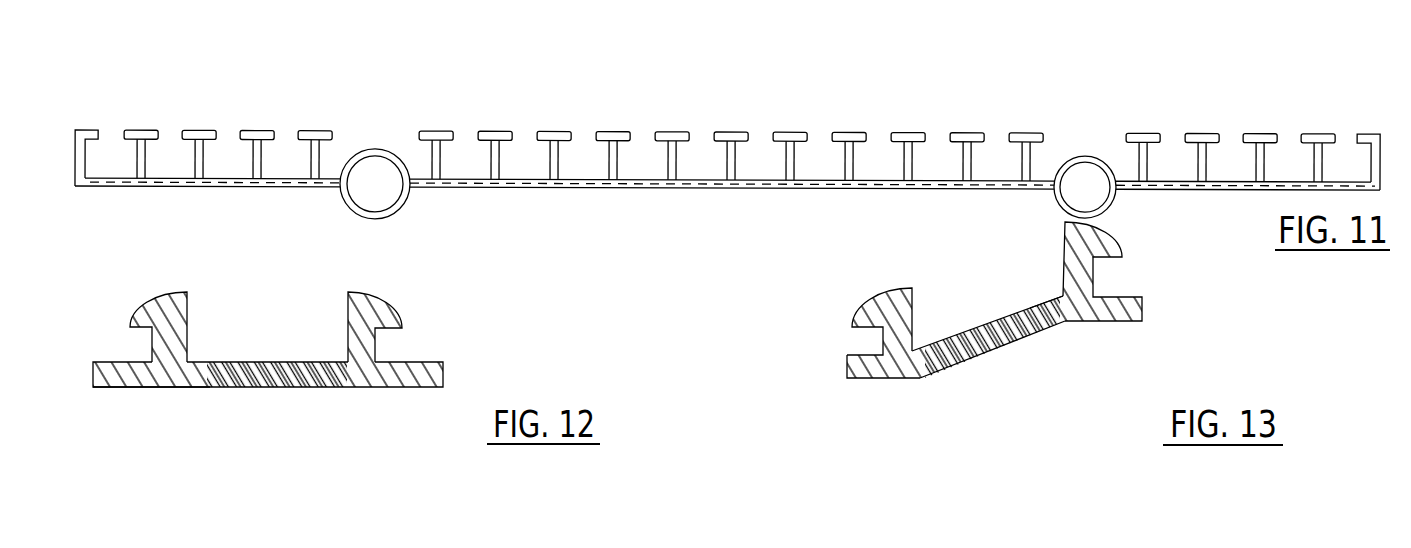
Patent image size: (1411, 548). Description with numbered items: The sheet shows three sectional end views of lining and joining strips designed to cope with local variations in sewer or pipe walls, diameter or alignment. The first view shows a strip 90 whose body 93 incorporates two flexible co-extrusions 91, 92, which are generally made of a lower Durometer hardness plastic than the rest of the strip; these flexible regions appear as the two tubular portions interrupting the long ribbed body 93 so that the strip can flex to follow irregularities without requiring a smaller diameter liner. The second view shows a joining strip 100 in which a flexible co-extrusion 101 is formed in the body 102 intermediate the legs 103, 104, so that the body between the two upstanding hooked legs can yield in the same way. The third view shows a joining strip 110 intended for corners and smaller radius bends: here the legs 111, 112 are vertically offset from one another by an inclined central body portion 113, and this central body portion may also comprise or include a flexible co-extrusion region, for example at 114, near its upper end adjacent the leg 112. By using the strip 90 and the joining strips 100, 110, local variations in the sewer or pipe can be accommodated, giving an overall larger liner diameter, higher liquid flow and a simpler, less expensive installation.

In FIG. 11, the strip 90 is at (728, 139).
In FIG. 11, the flexible co-extrusion 91 is at (362, 146).
In FIG. 11, the flexible co-extrusion 92 is at (1068, 148).
In FIG. 11, the body 93 is at (707, 187).
In FIG. 12, the joining strip 100 is at (316, 370).
In FIG. 12, the flexible co-extrusion 101 is at (303, 388).
In FIG. 12, the body 102 is at (172, 388).
In FIG. 12, the leg 103 is at (175, 332).
In FIG. 12, the leg 104 is at (357, 307).
In FIG. 13, the joining strip 110 is at (1060, 310).
In FIG. 13, the leg 111 is at (897, 313).
In FIG. 13, the leg 112 is at (1087, 273).
In FIG. 13, the inclined central body portion 113 is at (975, 356).
In FIG. 13, the flexible co-extrusion region 114 is at (1033, 306).